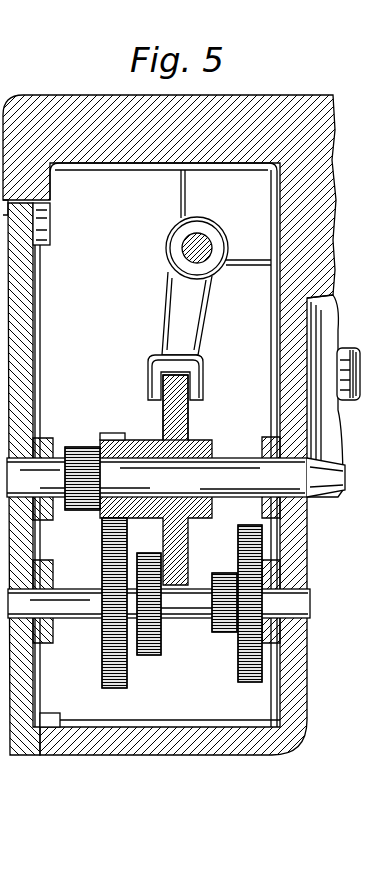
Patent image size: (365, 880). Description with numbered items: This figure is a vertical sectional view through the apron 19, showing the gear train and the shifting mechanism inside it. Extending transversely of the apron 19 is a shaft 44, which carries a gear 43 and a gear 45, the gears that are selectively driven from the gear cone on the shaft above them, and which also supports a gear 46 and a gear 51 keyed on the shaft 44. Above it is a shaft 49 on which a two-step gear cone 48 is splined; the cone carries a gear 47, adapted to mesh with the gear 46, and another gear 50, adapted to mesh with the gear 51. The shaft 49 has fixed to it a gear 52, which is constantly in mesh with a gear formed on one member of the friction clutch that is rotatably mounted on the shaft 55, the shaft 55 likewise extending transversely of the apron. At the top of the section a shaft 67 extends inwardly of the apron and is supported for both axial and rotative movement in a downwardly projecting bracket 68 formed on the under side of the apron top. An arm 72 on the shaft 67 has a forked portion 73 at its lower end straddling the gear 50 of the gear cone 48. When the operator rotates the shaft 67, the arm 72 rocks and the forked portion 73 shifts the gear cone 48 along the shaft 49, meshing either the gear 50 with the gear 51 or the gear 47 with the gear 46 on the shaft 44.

The apron 19 is at (362, 490).
The gear 43 is at (152, 647).
The shaft 44 is at (77, 613).
The gear 45 is at (248, 642).
The gear 46 is at (112, 558).
The gear 47 is at (110, 436).
The two-step gear cone 48 is at (147, 440).
The shaft 49 is at (228, 472).
The gear 50 is at (188, 420).
The gear 51 is at (222, 575).
The gear 52 is at (67, 447).
The shaft 55 is at (345, 348).
The shaft 67 is at (188, 240).
The bracket 68 is at (200, 218).
The arm 72 is at (197, 298).
The forked portion 73 is at (203, 378).